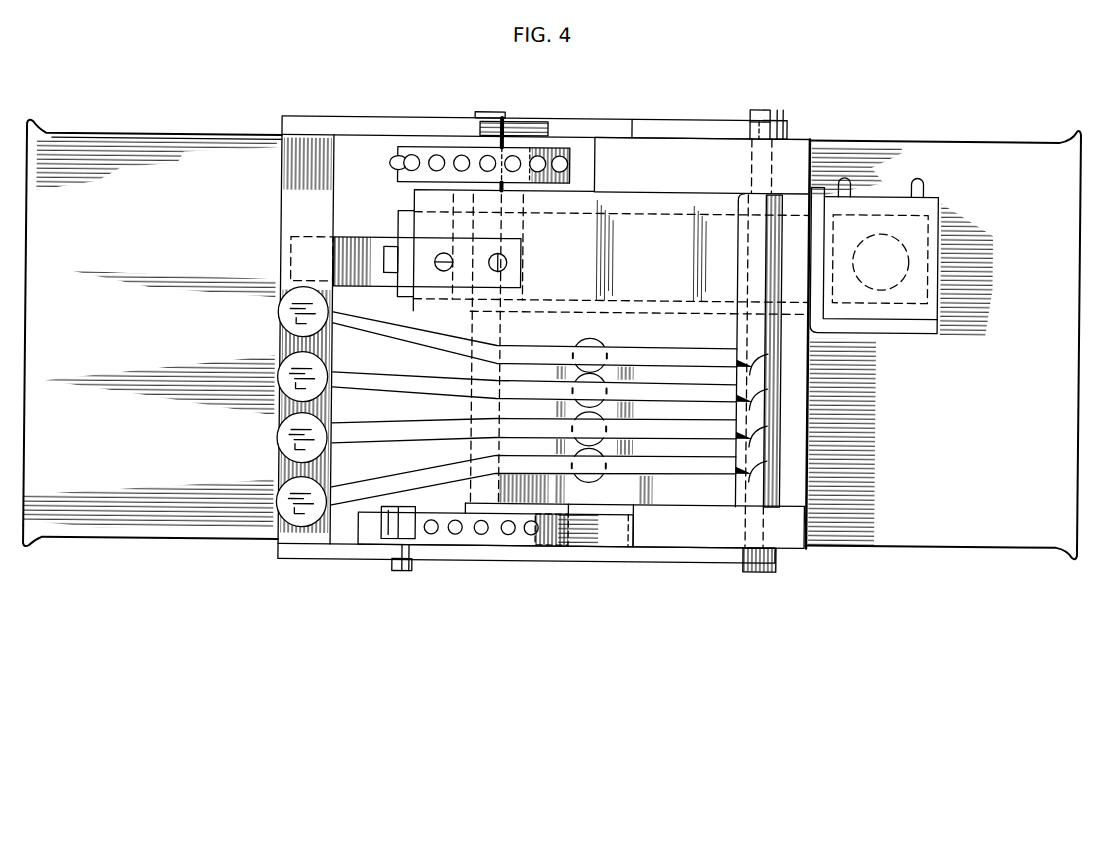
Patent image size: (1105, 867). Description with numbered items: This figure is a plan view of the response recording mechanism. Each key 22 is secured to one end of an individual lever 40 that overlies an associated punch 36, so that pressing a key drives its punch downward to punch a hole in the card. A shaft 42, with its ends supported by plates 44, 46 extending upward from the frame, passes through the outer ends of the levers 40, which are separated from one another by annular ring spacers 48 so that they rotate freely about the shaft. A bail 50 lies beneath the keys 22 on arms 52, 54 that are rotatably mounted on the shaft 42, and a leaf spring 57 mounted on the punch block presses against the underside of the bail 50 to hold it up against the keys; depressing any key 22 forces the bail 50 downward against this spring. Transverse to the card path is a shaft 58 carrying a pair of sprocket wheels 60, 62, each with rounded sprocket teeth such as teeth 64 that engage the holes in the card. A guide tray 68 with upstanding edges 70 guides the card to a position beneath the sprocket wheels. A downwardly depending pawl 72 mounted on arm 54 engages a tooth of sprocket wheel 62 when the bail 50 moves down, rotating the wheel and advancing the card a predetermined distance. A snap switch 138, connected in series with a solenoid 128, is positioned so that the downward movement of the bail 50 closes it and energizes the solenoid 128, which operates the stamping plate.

The key 22 is at (288, 352).
The punch 36 is at (605, 352).
The lever 40 is at (413, 383).
The shaft 42 is at (755, 570).
The plate 44 is at (692, 537).
The plate 46 is at (793, 155).
The annular ring spacer 48 is at (752, 373).
The bail 50 is at (290, 212).
The arm 52 is at (372, 118).
The arm 54 is at (365, 561).
The leaf spring 57 is at (365, 258).
The shaft 58 is at (493, 112).
The sprocket wheel 60 is at (547, 153).
The sprocket wheel 62 is at (512, 540).
The sprocket teeth 64 is at (462, 156).
The guide tray 68 is at (152, 349).
The upstanding edge 70 is at (181, 542).
The pawl 72 is at (373, 536).
The solenoid 128 is at (932, 272).
The snap switch 138 is at (408, 215).